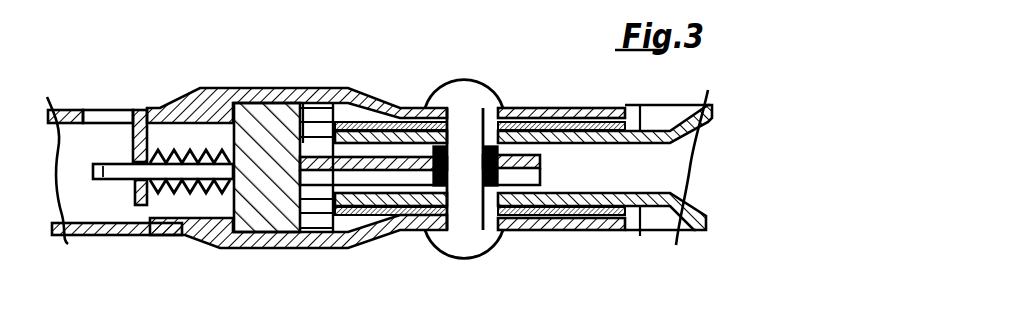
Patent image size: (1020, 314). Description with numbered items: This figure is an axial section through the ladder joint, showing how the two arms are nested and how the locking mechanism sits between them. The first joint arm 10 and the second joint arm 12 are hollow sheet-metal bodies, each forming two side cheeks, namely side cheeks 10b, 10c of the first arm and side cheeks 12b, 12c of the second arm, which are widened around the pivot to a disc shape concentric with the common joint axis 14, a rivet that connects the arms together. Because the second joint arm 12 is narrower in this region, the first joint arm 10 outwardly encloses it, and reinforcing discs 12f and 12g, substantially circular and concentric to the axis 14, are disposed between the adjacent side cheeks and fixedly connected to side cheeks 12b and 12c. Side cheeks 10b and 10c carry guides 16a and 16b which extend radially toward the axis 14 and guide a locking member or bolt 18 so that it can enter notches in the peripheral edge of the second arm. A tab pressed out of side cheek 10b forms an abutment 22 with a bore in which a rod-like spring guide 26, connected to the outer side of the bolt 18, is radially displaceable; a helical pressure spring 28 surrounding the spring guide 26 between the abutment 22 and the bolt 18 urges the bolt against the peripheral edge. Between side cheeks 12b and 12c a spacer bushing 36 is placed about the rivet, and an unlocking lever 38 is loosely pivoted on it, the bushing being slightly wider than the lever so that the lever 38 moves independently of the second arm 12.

The first joint arm 10 is at (80, 214).
The side cheek 10b is at (60, 110).
The side cheek 10c is at (122, 230).
The second joint arm 12 is at (688, 165).
The side cheek 12b is at (640, 128).
The side cheek 12c is at (640, 230).
The reinforcing disc 12f is at (573, 108).
The reinforcing disc 12g is at (575, 230).
The joint axis 14 is at (478, 252).
The guide 16a is at (315, 110).
The guide 16b is at (318, 238).
The locking member or bolt 18 is at (258, 226).
The abutment 22 is at (132, 140).
The spring guide 26 is at (90, 170).
The helical pressure spring 28 is at (195, 192).
The spacer bushing 36 is at (500, 184).
The unlocking lever 38 is at (527, 160).